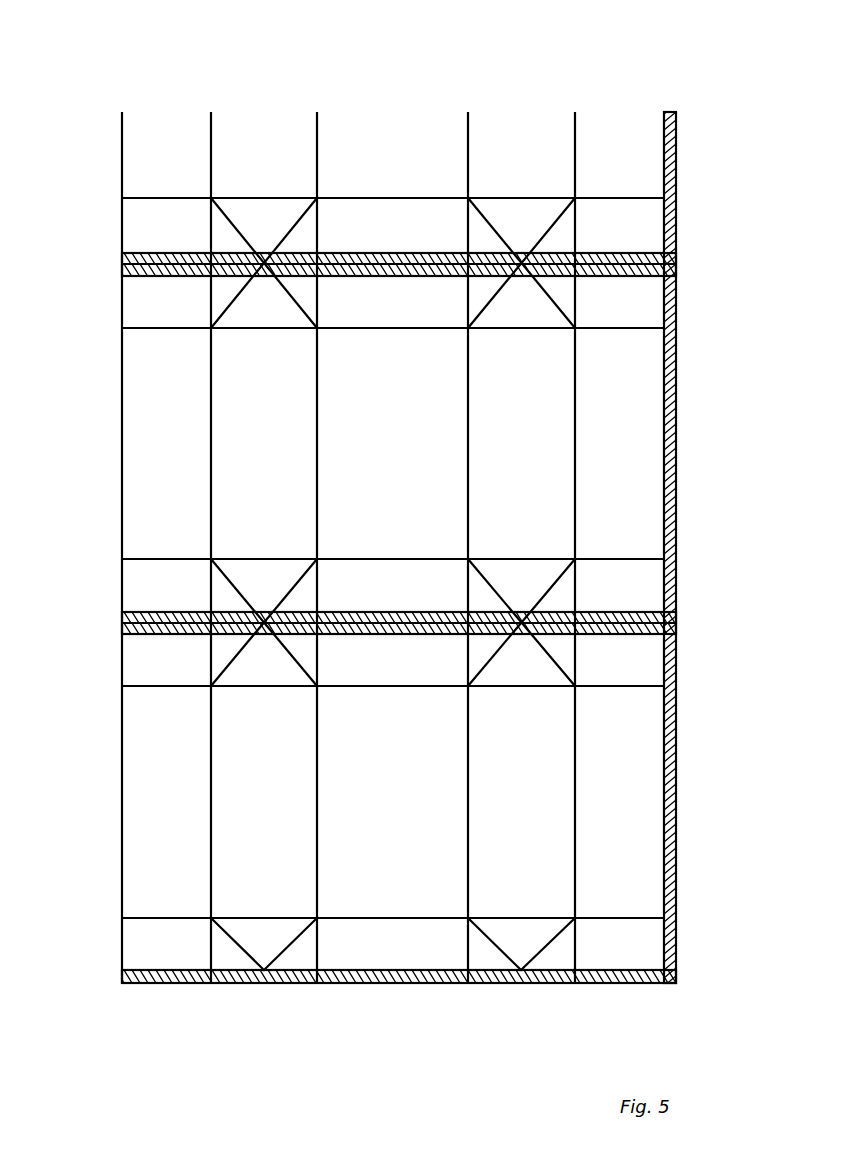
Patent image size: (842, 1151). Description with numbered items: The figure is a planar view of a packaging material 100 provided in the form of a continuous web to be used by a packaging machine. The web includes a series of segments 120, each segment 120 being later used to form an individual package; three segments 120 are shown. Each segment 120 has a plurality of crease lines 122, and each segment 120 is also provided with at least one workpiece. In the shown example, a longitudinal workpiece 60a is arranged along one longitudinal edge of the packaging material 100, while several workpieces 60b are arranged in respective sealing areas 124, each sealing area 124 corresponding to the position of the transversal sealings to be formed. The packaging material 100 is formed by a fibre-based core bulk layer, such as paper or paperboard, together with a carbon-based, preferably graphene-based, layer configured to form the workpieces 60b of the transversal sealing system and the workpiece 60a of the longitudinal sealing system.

The packaging material 100 is at (186, 138).
The longitudinal workpiece 60a is at (670, 508).
The workpiece 60b is at (375, 270).
The segment 120 is at (688, 620).
The crease lines 122 is at (430, 197).
The sealing area 124 is at (172, 288).